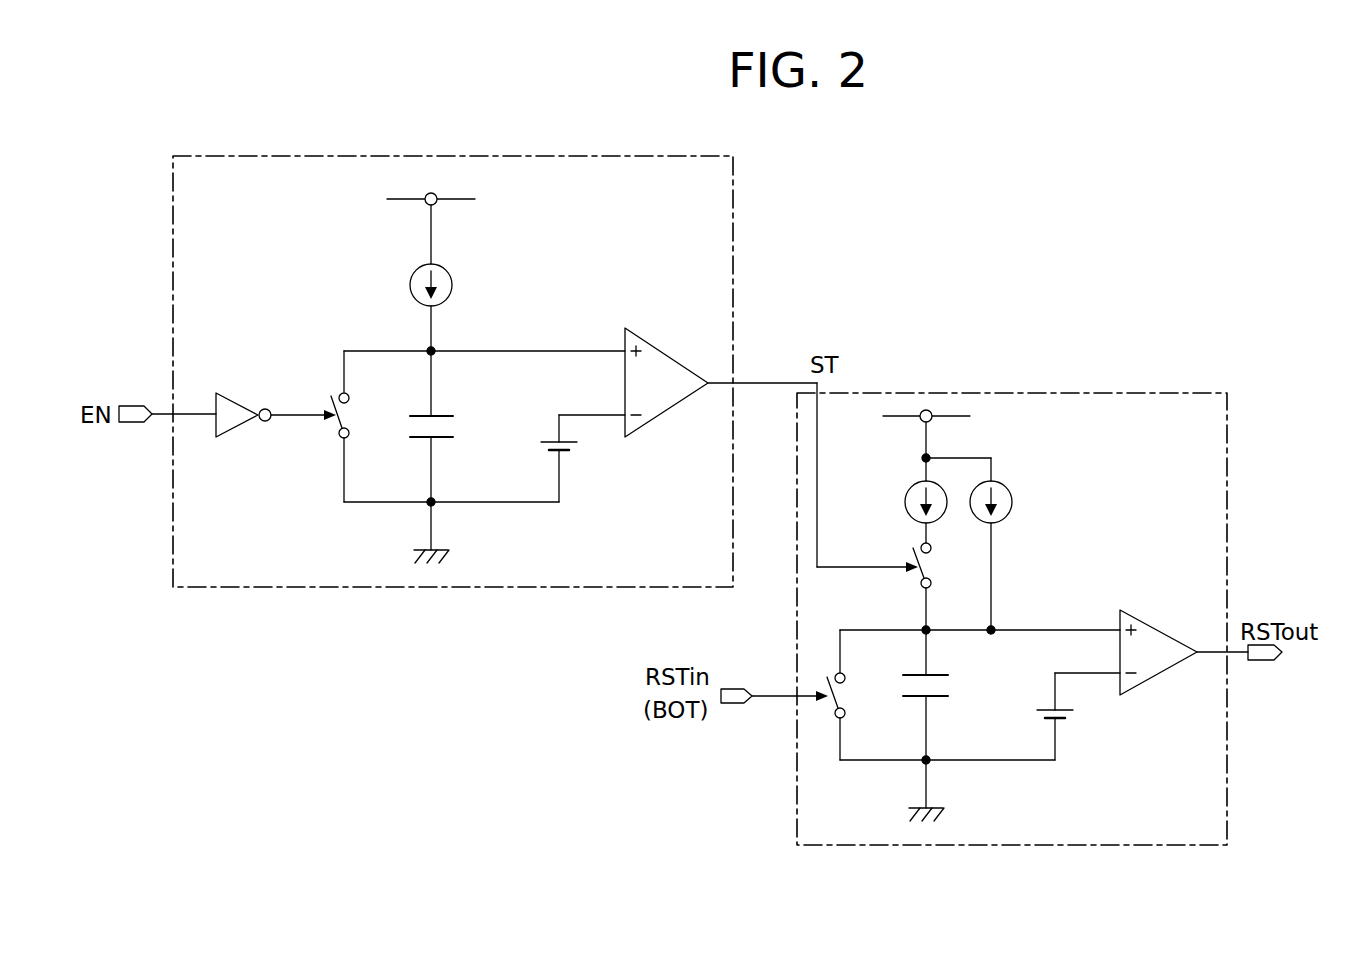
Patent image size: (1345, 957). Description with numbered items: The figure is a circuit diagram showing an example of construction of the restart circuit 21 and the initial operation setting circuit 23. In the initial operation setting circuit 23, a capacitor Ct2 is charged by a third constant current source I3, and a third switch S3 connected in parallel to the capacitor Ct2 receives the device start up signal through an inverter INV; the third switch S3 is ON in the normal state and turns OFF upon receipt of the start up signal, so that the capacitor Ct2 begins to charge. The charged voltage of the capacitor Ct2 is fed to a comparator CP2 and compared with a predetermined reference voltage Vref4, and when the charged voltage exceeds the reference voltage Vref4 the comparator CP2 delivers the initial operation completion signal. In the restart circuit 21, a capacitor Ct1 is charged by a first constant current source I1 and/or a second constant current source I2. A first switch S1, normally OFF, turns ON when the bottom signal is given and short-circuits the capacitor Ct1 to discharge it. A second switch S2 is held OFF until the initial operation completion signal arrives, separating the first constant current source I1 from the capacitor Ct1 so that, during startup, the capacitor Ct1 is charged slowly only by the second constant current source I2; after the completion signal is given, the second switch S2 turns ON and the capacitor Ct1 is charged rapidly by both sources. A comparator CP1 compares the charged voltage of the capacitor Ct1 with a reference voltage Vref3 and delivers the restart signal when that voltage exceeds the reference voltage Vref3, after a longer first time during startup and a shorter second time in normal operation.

The restart circuit 21 is at (1022, 592).
The initial operation setting circuit 23 is at (453, 404).
The inverter INV is at (240, 402).
The first switch S1 is at (825, 705).
The second switch S2 is at (904, 572).
The third switch S3 is at (324, 423).
The capacitor Ct1 is at (913, 702).
The capacitor Ct2 is at (407, 429).
The comparator CP1 is at (1158, 635).
The comparator CP2 is at (666, 377).
The first constant current source I1 is at (909, 502).
The second constant current source I2 is at (1006, 502).
The third constant current source I3 is at (415, 281).
The reference voltage Vref3 is at (1028, 701).
The reference voltage Vref4 is at (528, 432).